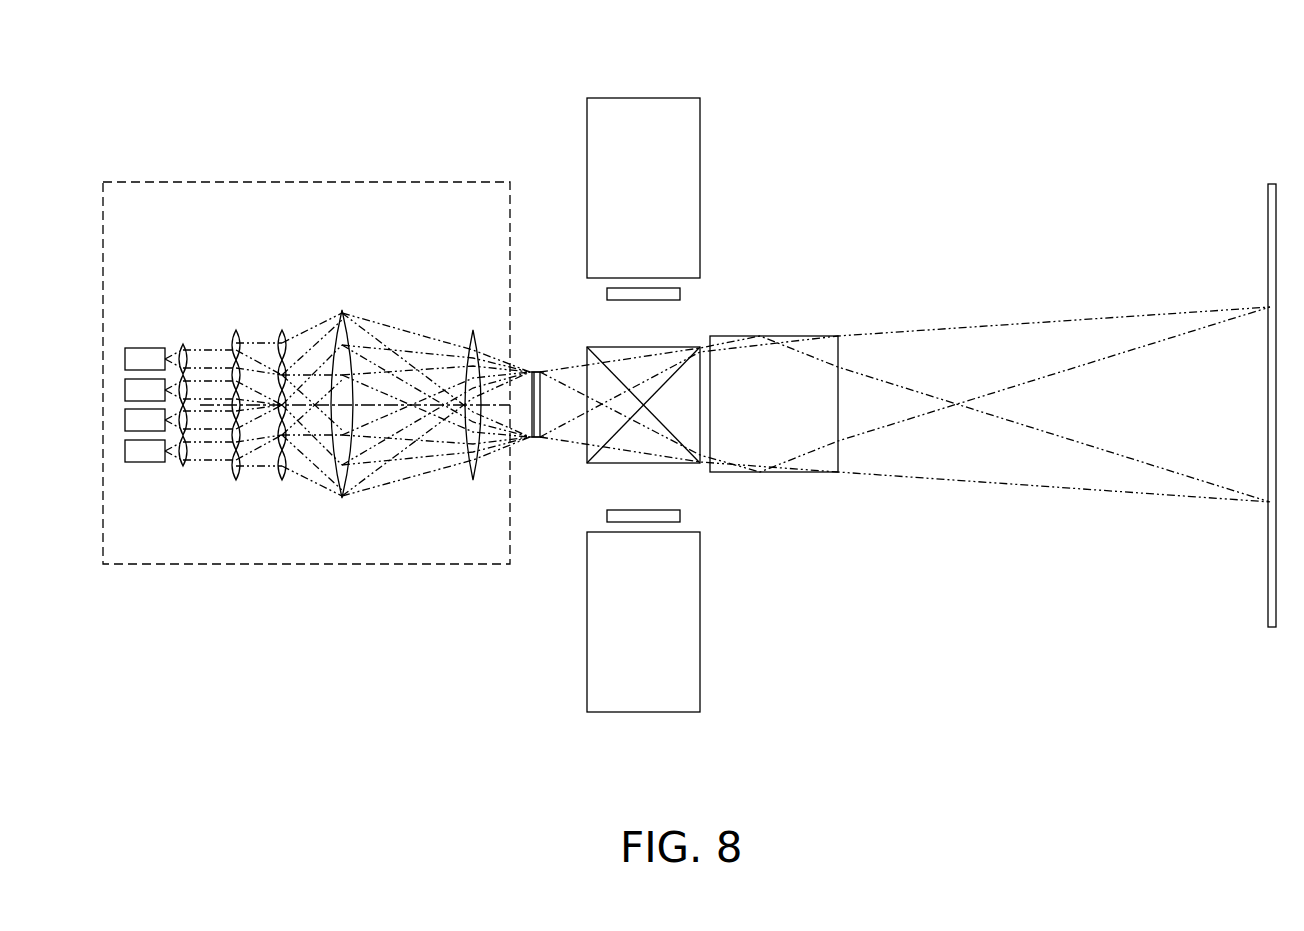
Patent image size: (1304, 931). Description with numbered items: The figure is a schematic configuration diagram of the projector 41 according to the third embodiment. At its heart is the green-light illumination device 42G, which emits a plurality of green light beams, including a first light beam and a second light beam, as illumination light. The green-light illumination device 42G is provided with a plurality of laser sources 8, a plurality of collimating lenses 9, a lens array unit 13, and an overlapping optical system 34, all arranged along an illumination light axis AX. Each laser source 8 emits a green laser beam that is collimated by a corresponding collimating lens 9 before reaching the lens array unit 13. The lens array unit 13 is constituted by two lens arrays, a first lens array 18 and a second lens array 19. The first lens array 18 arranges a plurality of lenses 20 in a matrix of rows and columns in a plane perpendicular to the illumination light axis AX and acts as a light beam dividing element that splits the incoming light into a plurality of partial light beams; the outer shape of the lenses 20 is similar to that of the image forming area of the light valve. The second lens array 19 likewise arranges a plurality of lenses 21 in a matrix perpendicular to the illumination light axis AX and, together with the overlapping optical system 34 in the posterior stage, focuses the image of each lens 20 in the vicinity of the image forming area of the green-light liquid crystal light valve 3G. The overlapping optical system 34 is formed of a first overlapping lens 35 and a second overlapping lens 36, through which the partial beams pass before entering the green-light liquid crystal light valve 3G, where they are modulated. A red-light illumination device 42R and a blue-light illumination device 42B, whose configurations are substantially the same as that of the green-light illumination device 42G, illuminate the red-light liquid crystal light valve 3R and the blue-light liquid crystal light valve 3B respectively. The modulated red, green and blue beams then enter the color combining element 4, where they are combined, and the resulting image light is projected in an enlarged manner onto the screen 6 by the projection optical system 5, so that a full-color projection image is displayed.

The projector 41 is at (492, 138).
The green-light illumination device 42G is at (314, 182).
The red-light illumination device 42R is at (700, 172).
The blue-light illumination device 42B is at (700, 614).
The laser source 8 is at (142, 356).
The collimating lens 9 is at (183, 343).
The lens array unit 13 is at (283, 233).
The first lens array 18 is at (229, 390).
The second lens array 19 is at (280, 390).
The lens 20 is at (236, 481).
The lens 21 is at (283, 481).
The overlapping optical system 34 is at (487, 250).
The first overlapping lens 35 is at (342, 309).
The second overlapping lens 36 is at (474, 329).
The illumination light axis AX is at (448, 440).
The green-light liquid crystal light valve 3G is at (535, 371).
The red-light liquid crystal light valve 3R is at (680, 294).
The blue-light liquid crystal light valve 3B is at (680, 516).
The color combining element 4 is at (660, 464).
The projection optical system 5 is at (784, 335).
The screen 6 is at (1268, 228).